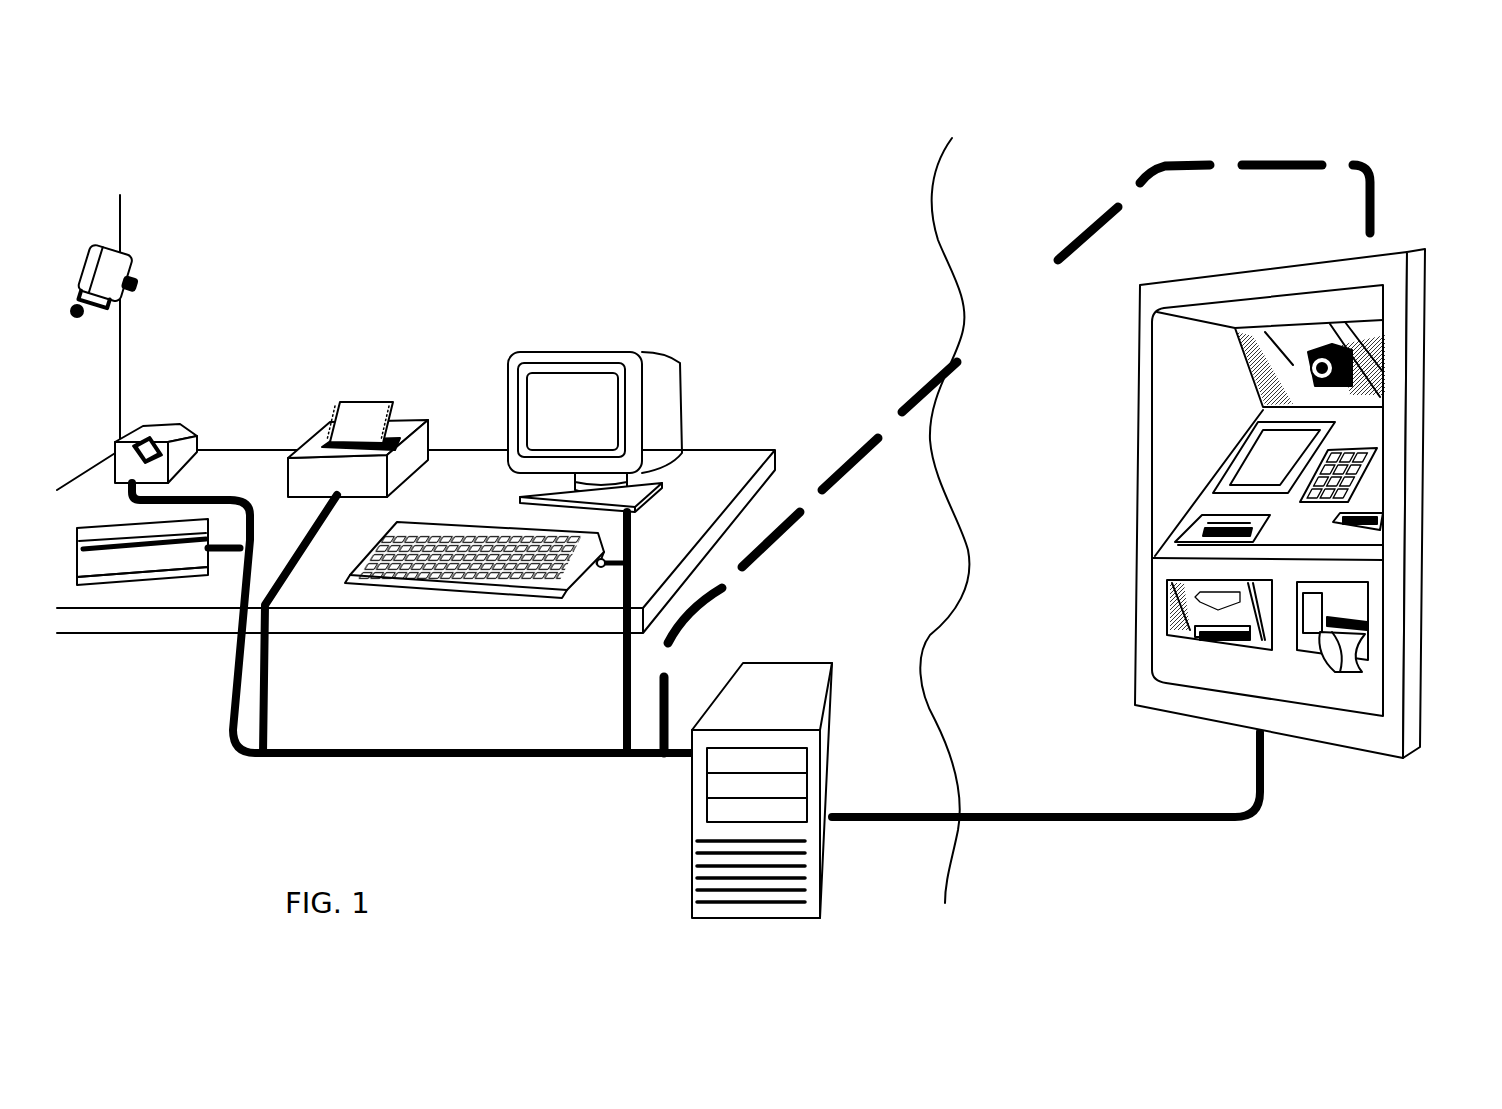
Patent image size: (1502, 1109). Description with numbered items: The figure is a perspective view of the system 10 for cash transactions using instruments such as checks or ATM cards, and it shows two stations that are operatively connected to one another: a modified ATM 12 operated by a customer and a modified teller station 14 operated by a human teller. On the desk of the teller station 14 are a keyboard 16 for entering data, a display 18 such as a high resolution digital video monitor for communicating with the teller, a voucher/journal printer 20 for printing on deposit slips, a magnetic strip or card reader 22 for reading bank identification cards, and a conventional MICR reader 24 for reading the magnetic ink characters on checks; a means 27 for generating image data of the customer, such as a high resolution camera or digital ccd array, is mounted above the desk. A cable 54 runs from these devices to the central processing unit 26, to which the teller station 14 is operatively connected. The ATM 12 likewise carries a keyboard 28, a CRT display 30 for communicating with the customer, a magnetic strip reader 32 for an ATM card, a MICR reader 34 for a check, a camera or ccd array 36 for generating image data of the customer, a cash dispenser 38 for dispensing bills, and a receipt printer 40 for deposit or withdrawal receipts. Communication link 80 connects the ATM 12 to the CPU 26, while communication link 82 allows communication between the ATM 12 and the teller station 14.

The system 10 is at (845, 205).
The ATM 12 is at (1245, 262).
The teller station 14 is at (485, 335).
The keyboard 16 is at (493, 590).
The display 18 is at (619, 348).
The voucher/journal printer 20 is at (355, 420).
The magnetic strip or card reader 22 is at (148, 425).
The magnetic ink character recognition (MICR) reader 24 is at (178, 580).
The central processing unit 26 is at (693, 825).
The means for generating image data of the customer 27 is at (117, 272).
The keyboard 28 is at (1360, 478).
The cathode ray tube (CRT) display 30 is at (1256, 455).
The magnetic strip reader 32 is at (1383, 533).
The MICR reader 34 is at (1198, 523).
The means for generating image data of the customer 36 is at (1315, 357).
The cash dispenser 38 is at (1175, 620).
The receipt printer 40 is at (1358, 650).
The cable 54 is at (413, 757).
The communication link 80 is at (1142, 815).
The communication link 82 is at (904, 412).